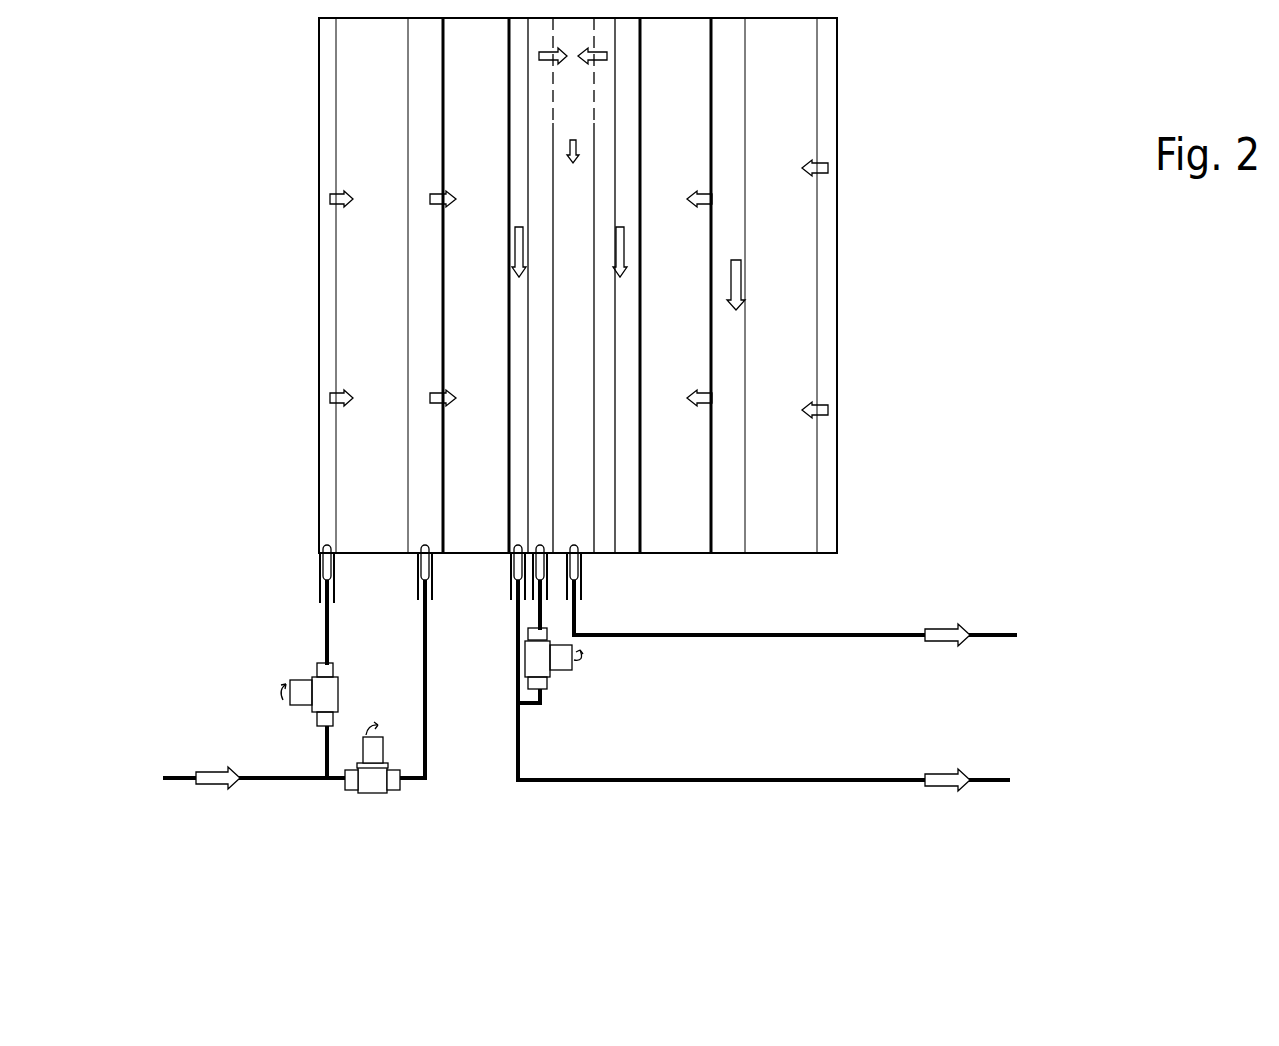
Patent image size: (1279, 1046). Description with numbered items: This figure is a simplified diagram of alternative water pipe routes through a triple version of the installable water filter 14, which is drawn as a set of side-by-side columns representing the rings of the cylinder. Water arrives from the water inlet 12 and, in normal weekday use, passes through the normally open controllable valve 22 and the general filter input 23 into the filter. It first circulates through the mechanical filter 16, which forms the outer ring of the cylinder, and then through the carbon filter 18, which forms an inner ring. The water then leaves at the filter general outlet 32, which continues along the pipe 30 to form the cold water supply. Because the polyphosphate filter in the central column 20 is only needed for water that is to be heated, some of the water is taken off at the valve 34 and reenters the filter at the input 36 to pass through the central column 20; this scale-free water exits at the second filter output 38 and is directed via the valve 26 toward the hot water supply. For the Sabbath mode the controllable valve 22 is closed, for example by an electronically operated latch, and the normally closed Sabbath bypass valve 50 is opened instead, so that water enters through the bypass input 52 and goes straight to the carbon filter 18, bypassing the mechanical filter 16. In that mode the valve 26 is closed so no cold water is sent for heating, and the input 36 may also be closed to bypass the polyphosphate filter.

The water inlet 12 is at (253, 808).
The installable water filter 14 is at (318, 136).
The mechanical filter 16 is at (378, 231).
The carbon filter 18 is at (488, 352).
The central column 20 is at (568, 448).
The controllable valve 22 is at (320, 748).
The general filter input 23 is at (318, 603).
The valve 26 is at (794, 670).
The pipe 30 is at (781, 795).
The filter general outlet 32 is at (517, 580).
The valve 34 is at (537, 608).
The input 36 is at (530, 680).
The second filter output 38 is at (573, 605).
The Sabbath bypass valve 50 is at (367, 808).
The bypass input 52 is at (425, 588).